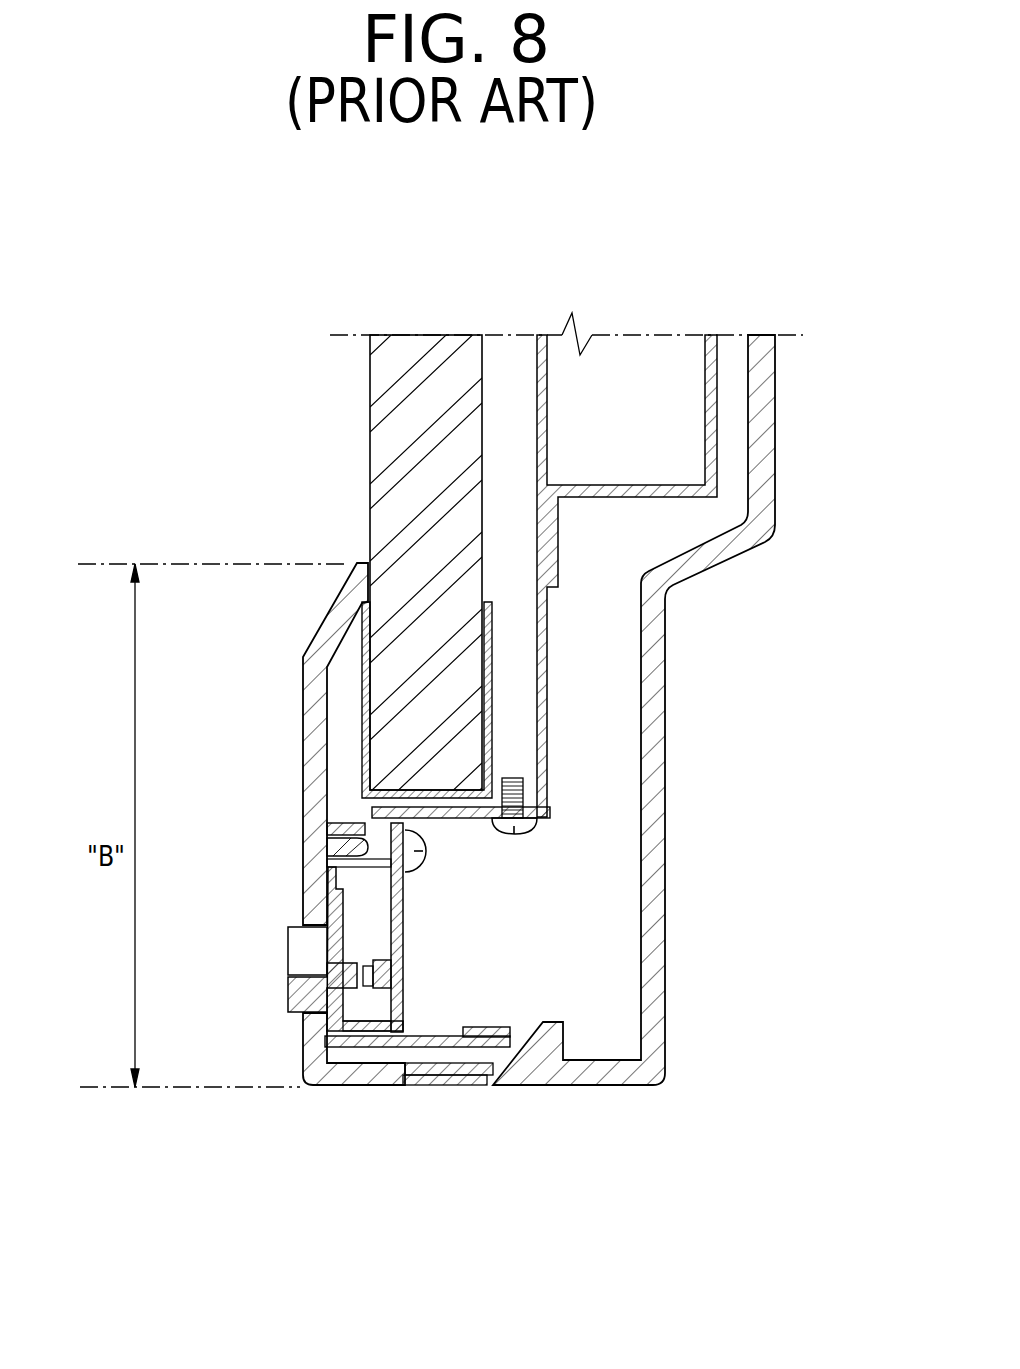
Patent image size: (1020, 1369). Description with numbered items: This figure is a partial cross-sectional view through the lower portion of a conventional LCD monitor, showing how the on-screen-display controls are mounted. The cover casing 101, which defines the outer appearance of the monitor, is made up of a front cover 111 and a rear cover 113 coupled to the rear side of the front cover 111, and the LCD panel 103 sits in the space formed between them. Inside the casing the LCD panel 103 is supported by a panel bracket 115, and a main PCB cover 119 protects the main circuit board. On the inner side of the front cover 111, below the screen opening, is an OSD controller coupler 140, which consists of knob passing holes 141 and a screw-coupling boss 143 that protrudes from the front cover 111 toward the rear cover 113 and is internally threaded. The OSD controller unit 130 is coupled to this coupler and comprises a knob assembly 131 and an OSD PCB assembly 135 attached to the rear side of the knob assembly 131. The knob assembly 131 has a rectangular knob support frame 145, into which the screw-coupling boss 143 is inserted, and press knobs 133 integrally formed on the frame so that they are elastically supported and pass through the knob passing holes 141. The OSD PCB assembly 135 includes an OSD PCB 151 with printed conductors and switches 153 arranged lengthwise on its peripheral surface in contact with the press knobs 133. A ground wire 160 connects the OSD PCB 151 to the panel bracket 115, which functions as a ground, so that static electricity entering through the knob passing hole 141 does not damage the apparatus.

The cover casing 101 is at (435, 1130).
The LCD panel 103 is at (392, 362).
The front cover 111 is at (417, 1112).
The rear cover 113 is at (497, 1087).
The panel bracket 115 is at (543, 757).
The main PCB cover 119 is at (717, 483).
The OSD controller unit 130 is at (390, 1064).
The knob assembly 131 is at (285, 1105).
The press knob 133 is at (287, 1007).
The OSD PCB assembly 135 is at (376, 1103).
The OSD controller coupler 140 is at (262, 769).
The knob passing hole 141 is at (310, 927).
The screw-coupling boss 143 is at (377, 843).
The knob support frame 145 is at (363, 984).
The OSD PCB 151 is at (405, 1035).
The switch 153 is at (374, 988).
The ground wire 160 is at (405, 878).